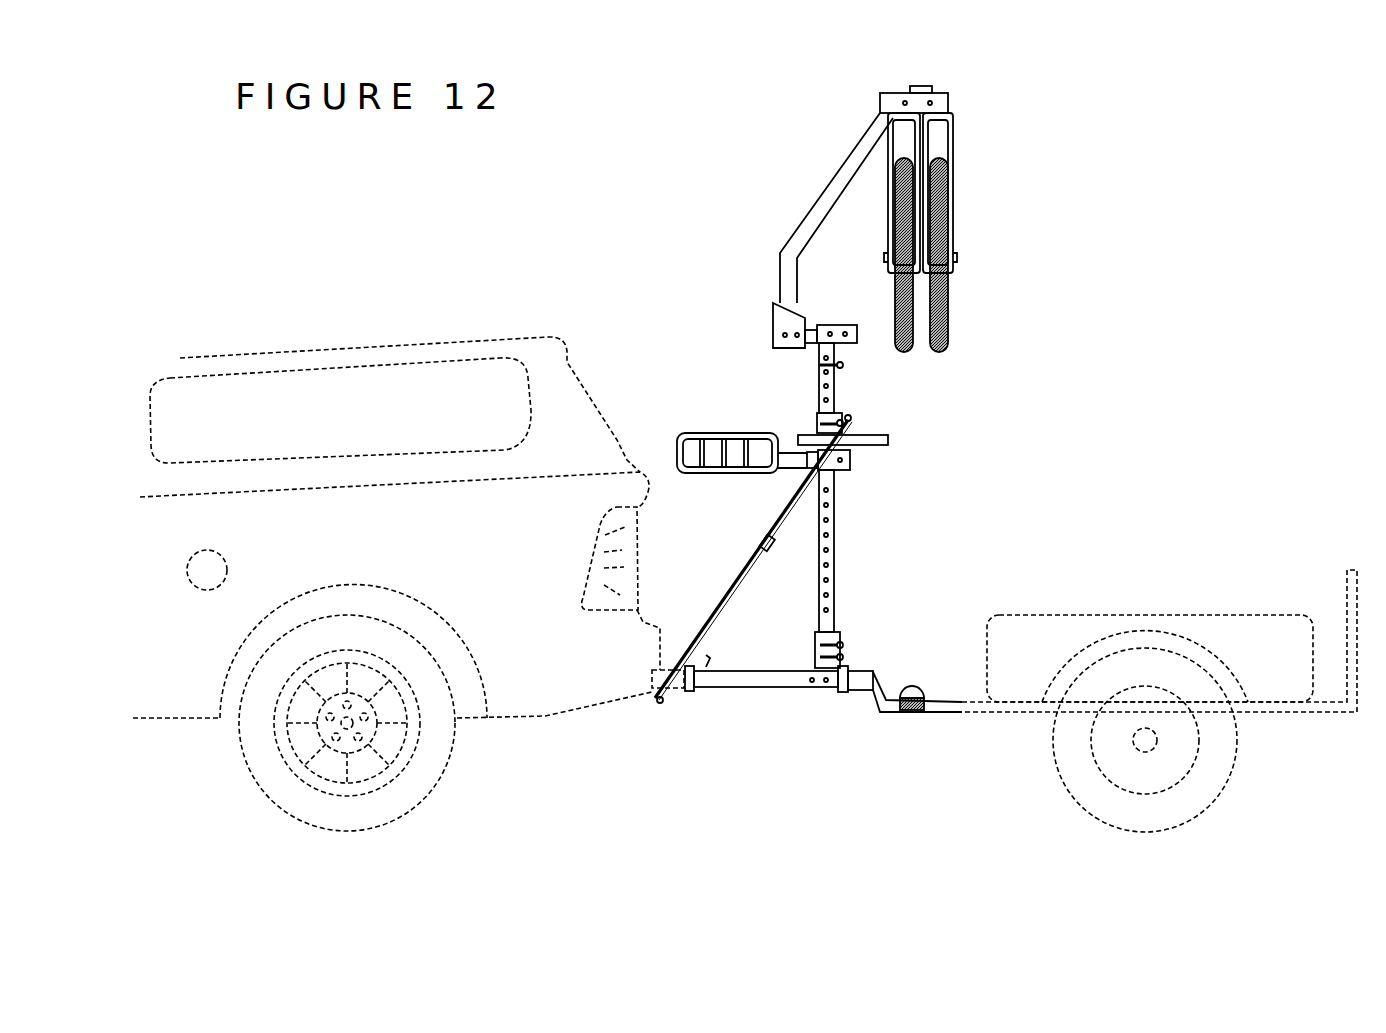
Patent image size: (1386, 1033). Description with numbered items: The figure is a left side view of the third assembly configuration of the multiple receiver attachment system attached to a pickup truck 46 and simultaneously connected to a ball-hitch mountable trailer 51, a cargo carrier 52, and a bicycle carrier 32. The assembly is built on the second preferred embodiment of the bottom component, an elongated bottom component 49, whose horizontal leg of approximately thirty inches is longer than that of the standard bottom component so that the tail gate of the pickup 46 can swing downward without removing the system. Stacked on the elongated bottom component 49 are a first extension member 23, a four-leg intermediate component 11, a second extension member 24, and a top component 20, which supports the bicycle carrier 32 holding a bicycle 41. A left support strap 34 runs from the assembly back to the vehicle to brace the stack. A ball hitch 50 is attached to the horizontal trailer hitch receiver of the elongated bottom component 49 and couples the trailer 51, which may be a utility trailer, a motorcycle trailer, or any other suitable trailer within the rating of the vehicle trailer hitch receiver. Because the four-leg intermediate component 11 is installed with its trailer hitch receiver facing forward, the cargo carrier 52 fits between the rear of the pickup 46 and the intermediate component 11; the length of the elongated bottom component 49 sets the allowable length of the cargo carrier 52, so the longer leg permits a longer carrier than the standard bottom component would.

The four-leg intermediate component 11 is at (848, 462).
The top component 20 is at (850, 345).
The first extension member 23 is at (840, 578).
The second extension member 24 is at (818, 390).
The bicycle carrier 32 is at (800, 237).
The left support strap 34 is at (742, 577).
The bicycle 41 is at (888, 243).
The pickup truck 46 is at (552, 367).
The elongated bottom component 49 is at (782, 682).
The ball hitch 50 is at (860, 683).
The ball-hitch mountable trailer 51 is at (1345, 607).
The cargo carrier 52 is at (728, 432).